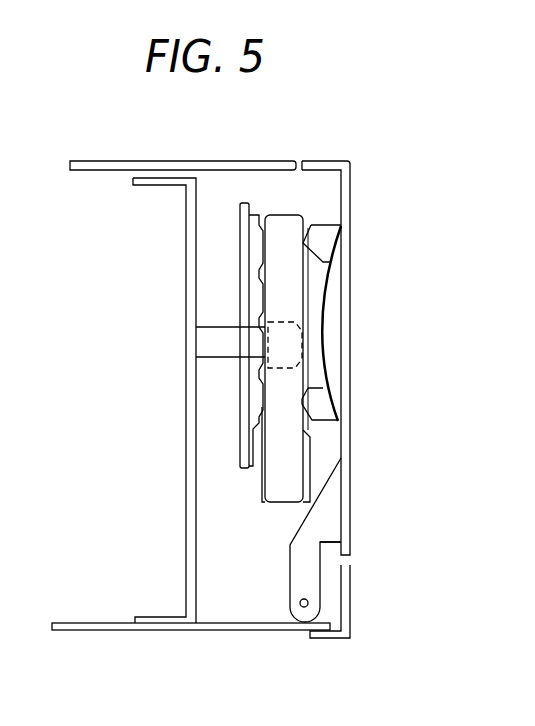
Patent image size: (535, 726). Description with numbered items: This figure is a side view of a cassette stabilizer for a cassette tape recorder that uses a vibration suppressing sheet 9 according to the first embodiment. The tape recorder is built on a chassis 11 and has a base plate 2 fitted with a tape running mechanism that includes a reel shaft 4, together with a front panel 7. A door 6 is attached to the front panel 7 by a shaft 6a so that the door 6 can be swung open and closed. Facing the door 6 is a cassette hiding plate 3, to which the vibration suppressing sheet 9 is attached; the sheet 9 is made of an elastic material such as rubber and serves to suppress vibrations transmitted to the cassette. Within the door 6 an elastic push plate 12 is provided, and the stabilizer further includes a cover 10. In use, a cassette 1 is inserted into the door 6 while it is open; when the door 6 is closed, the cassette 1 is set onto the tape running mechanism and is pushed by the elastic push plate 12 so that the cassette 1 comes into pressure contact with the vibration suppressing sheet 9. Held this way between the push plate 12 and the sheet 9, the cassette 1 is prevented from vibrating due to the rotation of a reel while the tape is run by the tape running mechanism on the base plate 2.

The cassette 1 is at (282, 214).
The base plate 2 is at (187, 502).
The cassette hiding plate 3 is at (240, 396).
The reel shaft 4 is at (303, 352).
The door 6 is at (323, 517).
The shaft 6a is at (302, 622).
The front panel 7 is at (352, 604).
The vibration suppressing sheet 9 is at (250, 243).
The cover 10 is at (208, 160).
The chassis 11 is at (209, 632).
The elastic push plate 12 is at (325, 410).